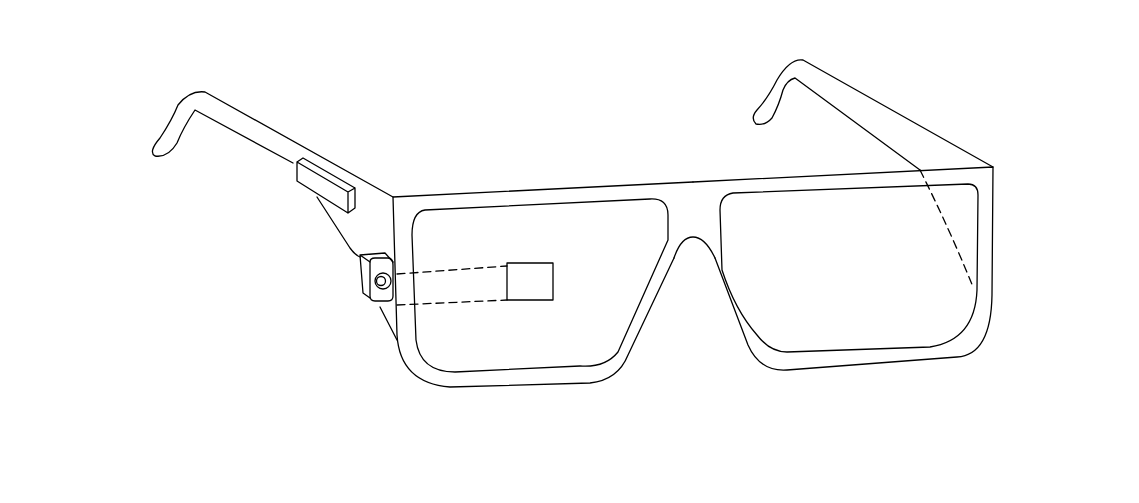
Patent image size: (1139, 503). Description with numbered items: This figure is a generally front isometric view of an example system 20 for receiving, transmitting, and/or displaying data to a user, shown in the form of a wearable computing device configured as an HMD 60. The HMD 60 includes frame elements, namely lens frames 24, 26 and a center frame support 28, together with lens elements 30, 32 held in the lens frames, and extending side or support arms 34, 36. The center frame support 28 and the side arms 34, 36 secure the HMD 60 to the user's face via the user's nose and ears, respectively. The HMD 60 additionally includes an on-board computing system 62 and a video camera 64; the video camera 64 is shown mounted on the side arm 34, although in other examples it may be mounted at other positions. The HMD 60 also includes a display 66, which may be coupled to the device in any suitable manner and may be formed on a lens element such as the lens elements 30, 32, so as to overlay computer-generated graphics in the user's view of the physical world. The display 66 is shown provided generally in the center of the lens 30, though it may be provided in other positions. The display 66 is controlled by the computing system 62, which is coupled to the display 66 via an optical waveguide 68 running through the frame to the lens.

The system 20 is at (950, 96).
The lens frame 24 is at (470, 195).
The lens frame 26 is at (773, 178).
The center frame support 28 is at (695, 202).
The lens element 30 is at (500, 360).
The lens element 32 is at (848, 340).
The side arm 34 is at (292, 148).
The side arm 36 is at (857, 100).
The HMD 60 is at (563, 184).
The on-board computing system 62 is at (313, 184).
The video camera 64 is at (362, 286).
The display 66 is at (527, 301).
The optical waveguide 68 is at (438, 304).